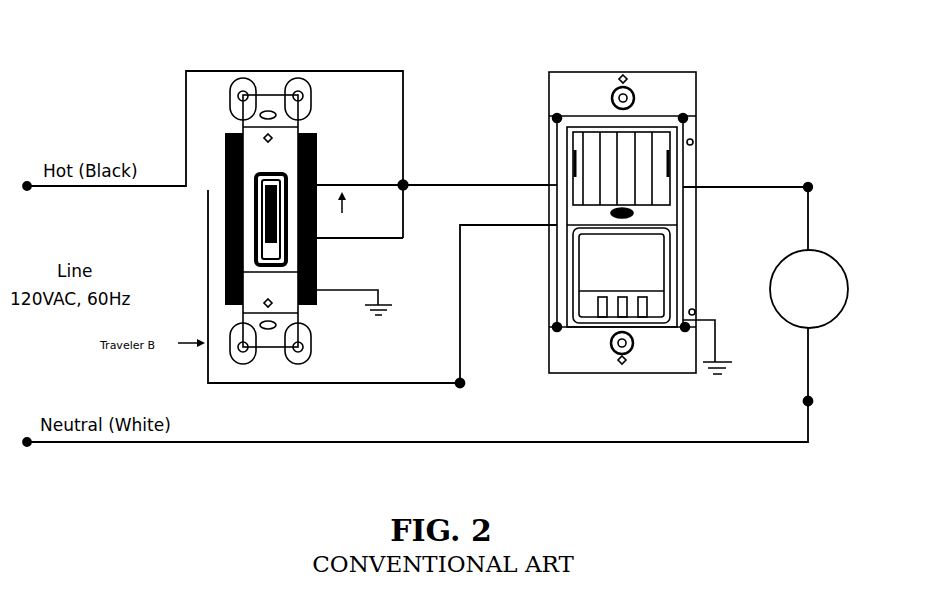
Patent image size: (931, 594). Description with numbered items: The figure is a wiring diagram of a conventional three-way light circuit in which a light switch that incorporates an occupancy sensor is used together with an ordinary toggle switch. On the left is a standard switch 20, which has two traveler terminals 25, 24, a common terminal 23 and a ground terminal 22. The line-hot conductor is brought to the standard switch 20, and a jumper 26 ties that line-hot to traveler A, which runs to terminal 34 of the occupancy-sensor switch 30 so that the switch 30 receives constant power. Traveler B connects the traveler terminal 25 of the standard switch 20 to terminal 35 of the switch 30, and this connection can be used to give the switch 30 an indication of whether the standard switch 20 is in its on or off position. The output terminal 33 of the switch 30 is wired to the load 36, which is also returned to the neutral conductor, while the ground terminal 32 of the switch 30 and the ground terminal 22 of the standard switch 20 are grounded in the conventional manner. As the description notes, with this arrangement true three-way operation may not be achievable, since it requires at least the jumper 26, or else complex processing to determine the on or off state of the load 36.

The standard switch 20 is at (256, 51).
The ground terminal 22 is at (310, 293).
The common terminal 23 is at (337, 179).
The traveler terminal 24 is at (318, 237).
The traveler terminal 25 is at (225, 186).
The jumper 26 is at (411, 175).
The switch incorporating an occupancy sensor 30 is at (643, 58).
The ground terminal 32 is at (697, 318).
The output terminal 33 is at (698, 186).
The terminal 34 is at (548, 183).
The terminal 35 is at (548, 228).
The load 36 is at (847, 278).